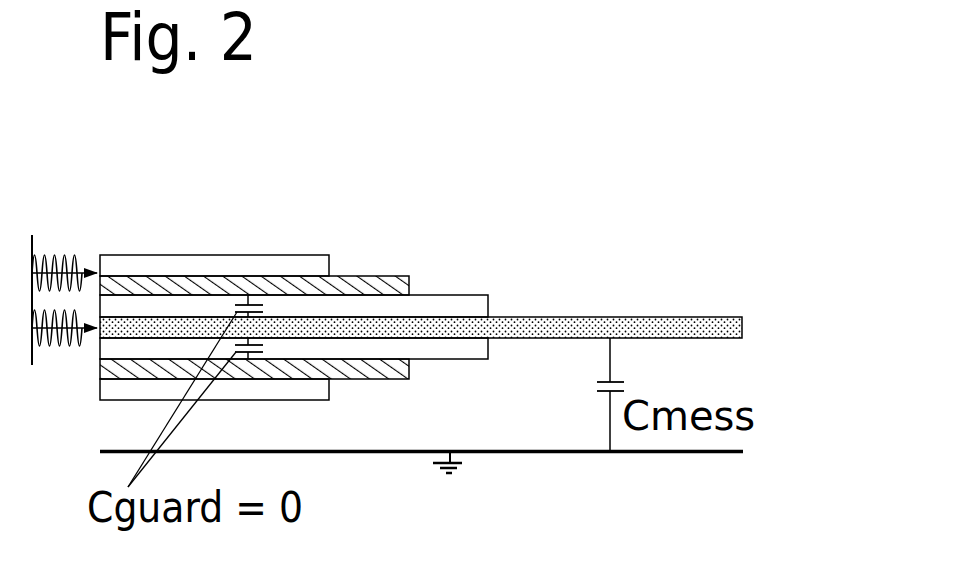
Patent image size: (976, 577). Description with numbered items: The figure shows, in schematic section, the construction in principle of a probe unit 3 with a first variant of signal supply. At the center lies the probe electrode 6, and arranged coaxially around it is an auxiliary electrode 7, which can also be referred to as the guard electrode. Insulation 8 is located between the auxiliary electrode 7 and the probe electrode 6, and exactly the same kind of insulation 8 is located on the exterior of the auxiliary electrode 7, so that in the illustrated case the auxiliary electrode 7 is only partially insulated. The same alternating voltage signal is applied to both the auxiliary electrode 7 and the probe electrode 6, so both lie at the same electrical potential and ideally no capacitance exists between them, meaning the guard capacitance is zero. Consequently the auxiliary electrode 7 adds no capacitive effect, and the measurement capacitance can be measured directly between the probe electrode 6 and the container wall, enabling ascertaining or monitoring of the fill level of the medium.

The probe unit 3 is at (443, 170).
The probe electrode 6 is at (630, 316).
The auxiliary electrode 7 is at (408, 378).
The insulation 8 is at (318, 255).